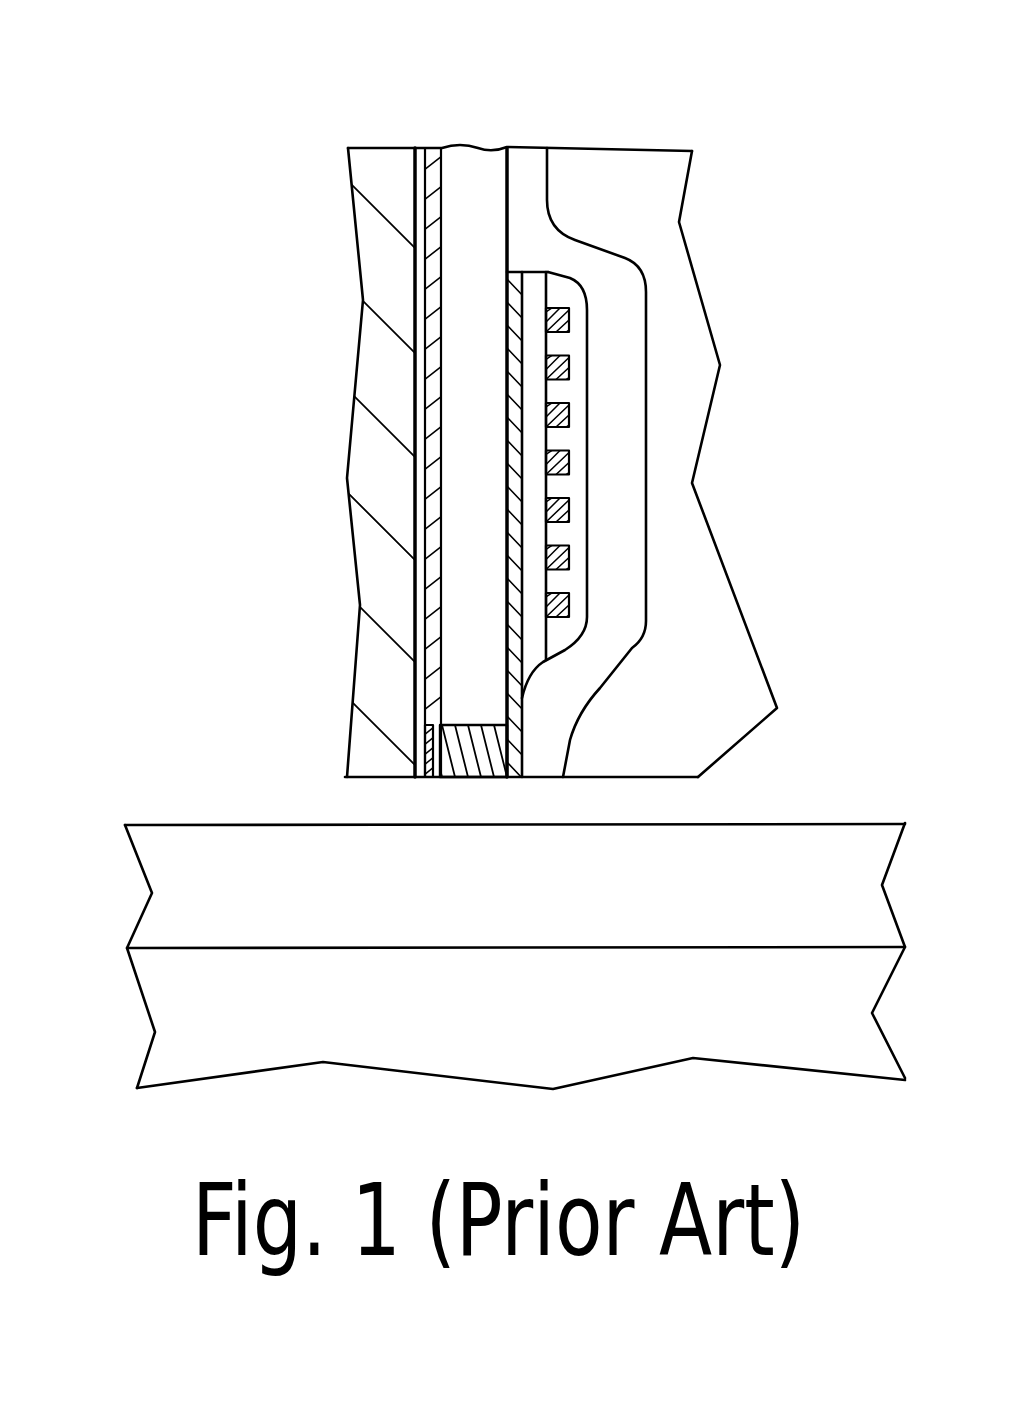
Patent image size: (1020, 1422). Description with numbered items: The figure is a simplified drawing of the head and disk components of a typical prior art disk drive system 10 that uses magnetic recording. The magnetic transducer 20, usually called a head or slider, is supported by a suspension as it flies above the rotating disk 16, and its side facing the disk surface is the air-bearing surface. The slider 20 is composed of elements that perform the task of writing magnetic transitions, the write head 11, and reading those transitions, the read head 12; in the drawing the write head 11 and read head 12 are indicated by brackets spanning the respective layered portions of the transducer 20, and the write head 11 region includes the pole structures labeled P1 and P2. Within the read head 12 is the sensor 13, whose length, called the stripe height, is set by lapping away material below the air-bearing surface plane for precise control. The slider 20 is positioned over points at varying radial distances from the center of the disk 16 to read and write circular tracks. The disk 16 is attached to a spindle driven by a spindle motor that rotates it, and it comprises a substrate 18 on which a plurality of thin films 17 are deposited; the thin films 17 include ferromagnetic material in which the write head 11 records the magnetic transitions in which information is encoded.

The disk drive system 10 is at (240, 228).
The write head 11 is at (425, 127).
The read head 12 is at (343, 95).
The sensor 13 is at (427, 731).
The disk 16 is at (205, 790).
The thin films 17 is at (190, 878).
The substrate 18 is at (178, 1015).
The magnetic transducer 20 is at (722, 488).
The first pole piece P1 is at (470, 725).
The second pole piece P2 is at (570, 700).